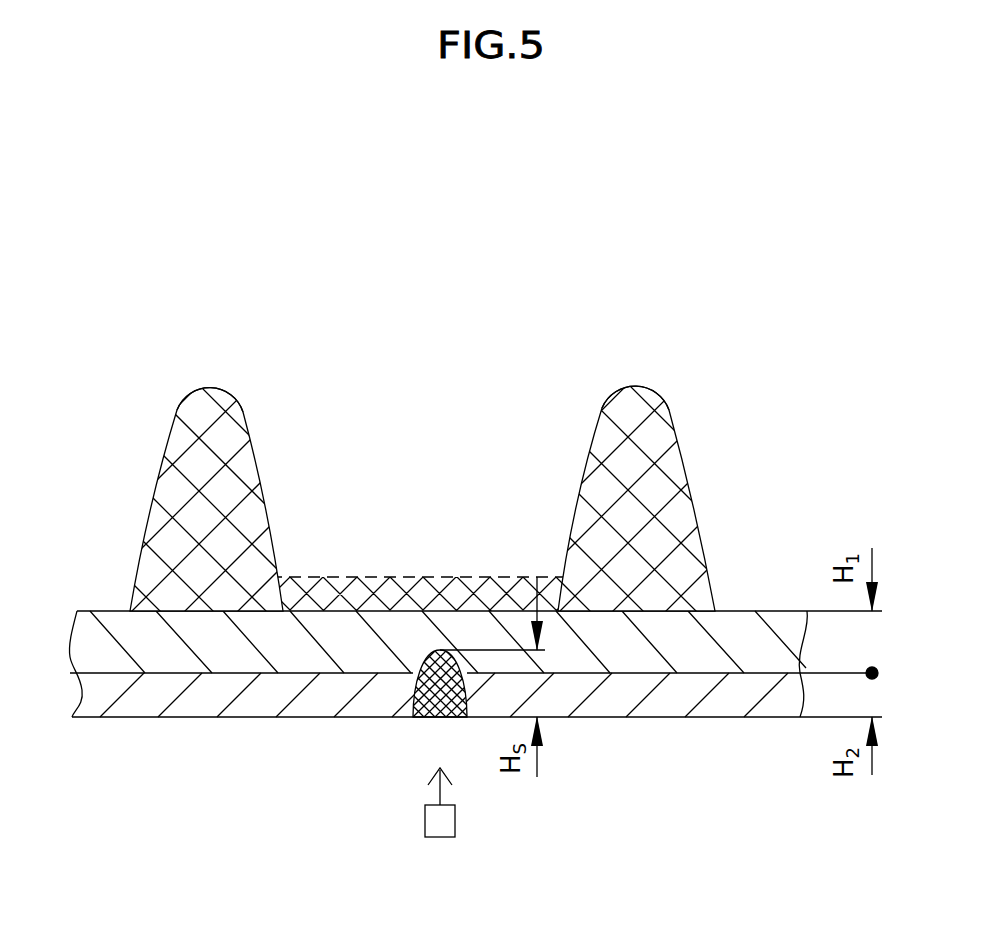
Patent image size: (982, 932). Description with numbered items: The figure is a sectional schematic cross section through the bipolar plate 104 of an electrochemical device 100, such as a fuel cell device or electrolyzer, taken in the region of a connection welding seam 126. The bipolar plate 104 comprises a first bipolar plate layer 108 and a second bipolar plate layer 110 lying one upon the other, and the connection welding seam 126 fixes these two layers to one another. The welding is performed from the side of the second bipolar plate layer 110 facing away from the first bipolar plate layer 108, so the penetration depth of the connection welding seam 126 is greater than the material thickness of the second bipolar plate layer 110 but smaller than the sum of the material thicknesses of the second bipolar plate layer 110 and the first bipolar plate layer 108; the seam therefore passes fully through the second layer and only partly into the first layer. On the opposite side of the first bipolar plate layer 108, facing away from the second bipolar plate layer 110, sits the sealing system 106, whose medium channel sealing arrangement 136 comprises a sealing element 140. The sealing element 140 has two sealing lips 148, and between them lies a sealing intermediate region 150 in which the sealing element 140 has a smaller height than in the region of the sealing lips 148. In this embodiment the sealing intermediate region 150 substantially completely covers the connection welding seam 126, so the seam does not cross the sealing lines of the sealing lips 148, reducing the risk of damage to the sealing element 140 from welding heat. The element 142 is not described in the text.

The electrochemical device 100 is at (482, 516).
The bipolar plate 104 is at (733, 610).
The sealing system 106 is at (628, 435).
The first bipolar plate layer 108 is at (475, 606).
The second bipolar plate layer 110 is at (725, 697).
The connection welding seam 126 is at (423, 683).
The medium channel sealing arrangement 136 is at (198, 380).
The sealing element 140 is at (683, 433).
The light source 142 is at (442, 830).
The sealing lip 148 is at (212, 410).
The sealing intermediate region 150 is at (462, 577).